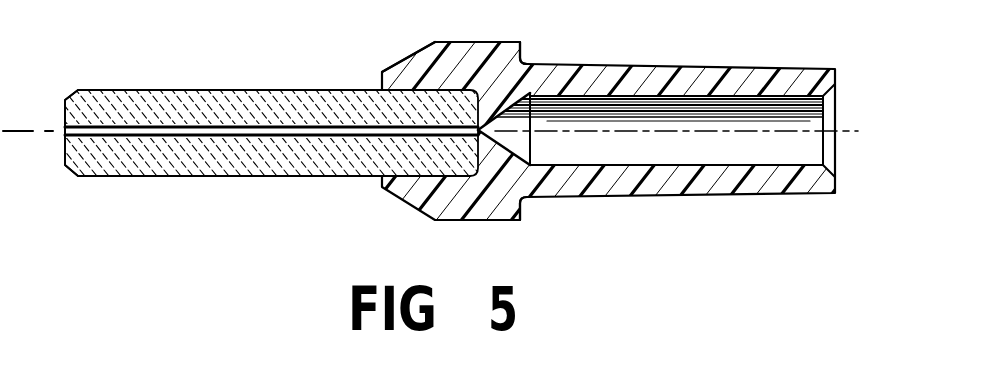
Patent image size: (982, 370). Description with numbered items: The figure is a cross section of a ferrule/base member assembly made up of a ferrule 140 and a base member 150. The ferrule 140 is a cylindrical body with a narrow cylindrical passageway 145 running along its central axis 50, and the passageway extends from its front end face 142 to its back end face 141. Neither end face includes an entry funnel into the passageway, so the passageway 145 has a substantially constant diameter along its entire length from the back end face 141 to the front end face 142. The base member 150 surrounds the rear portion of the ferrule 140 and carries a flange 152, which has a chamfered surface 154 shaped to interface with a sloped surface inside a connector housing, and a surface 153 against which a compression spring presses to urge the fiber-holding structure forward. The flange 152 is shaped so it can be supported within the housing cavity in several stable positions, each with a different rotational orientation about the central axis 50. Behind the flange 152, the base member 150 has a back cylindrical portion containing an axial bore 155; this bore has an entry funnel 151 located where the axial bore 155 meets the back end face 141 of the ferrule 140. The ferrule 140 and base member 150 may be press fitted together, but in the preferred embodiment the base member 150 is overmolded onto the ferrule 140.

The central axis 50 is at (17, 122).
The ferrule 140 is at (191, 186).
The back end face 141 is at (478, 117).
The front end face 142 is at (67, 147).
The cylindrical passageway 145 is at (185, 130).
The base member 150 is at (652, 208).
The entry funnel 151 is at (520, 147).
The flange 152 is at (450, 233).
The surface 153 is at (522, 60).
The chamfered surface 154 is at (408, 69).
The axial bore 155 is at (641, 116).